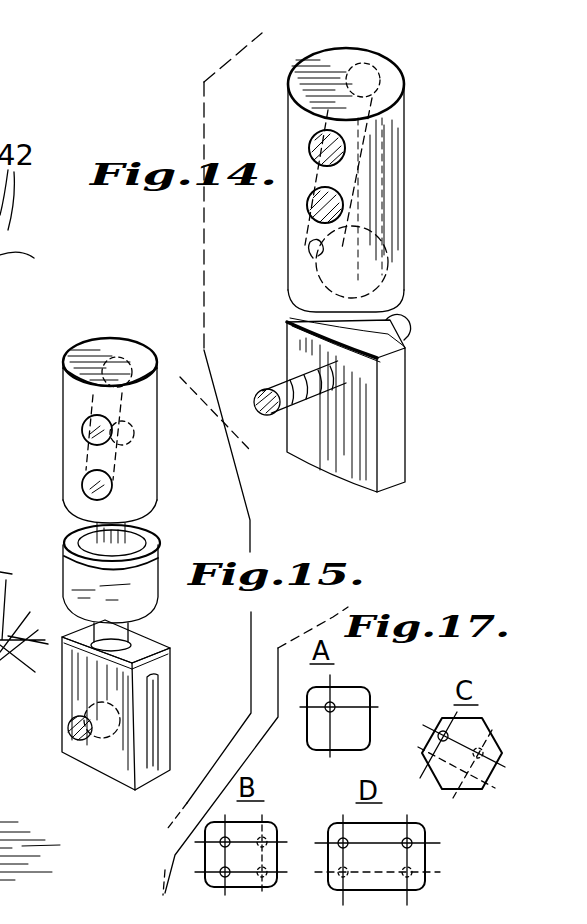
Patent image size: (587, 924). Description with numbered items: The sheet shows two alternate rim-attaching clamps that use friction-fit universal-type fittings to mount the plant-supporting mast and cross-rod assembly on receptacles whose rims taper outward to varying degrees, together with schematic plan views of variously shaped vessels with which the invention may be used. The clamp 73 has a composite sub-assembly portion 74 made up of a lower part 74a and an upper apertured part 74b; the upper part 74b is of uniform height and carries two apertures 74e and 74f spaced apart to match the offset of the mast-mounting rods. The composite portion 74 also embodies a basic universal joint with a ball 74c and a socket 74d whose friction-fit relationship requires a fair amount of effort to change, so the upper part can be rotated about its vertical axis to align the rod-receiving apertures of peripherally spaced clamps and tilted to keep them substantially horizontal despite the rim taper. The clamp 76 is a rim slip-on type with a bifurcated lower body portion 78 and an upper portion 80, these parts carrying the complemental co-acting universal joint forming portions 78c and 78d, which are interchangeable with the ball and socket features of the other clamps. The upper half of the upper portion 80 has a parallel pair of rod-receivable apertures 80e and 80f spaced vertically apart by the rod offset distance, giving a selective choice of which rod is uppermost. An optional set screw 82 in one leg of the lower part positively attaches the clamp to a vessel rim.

In FIG. 14, the composite sub-assembly portion 74 is at (274, 272).
In FIG. 14, the lower part 74a is at (395, 413).
In FIG. 14, the upper apertured part 74b is at (400, 112).
In FIG. 14, the ball 74c is at (370, 284).
In FIG. 14, the socket 74d is at (306, 254).
In FIG. 14, the aperture 74e is at (309, 148).
In FIG. 14, the aperture 74f is at (307, 208).
In FIG. 14, the clamp 73 is at (436, 360).
In FIG. 15, the upper portion 80 is at (63, 384).
In FIG. 15, the rod-receivable aperture 80e is at (84, 432).
In FIG. 15, the rod-receivable aperture 80f is at (84, 484).
In FIG. 15, the bifurcated lower body portion 78 is at (172, 600).
In FIG. 15, the universal joint forming portion 78c is at (68, 588).
In FIG. 15, the universal joint forming portion 78d is at (164, 576).
In FIG. 15, the clamp 76 is at (192, 669).
In FIG. 15, the set screw 82 is at (78, 745).